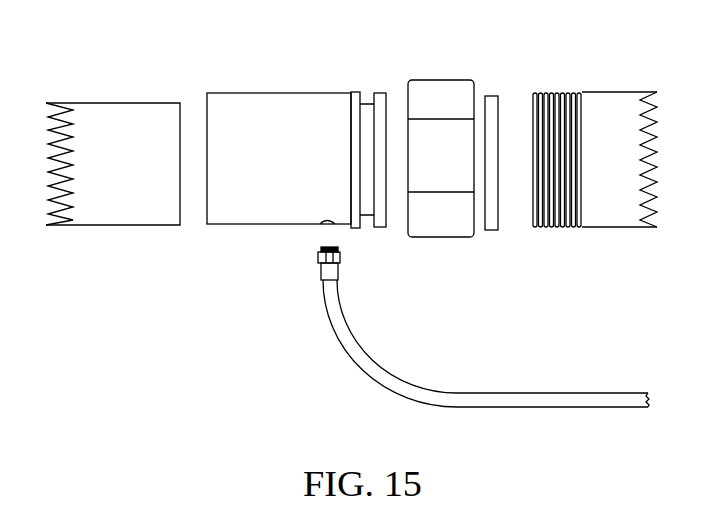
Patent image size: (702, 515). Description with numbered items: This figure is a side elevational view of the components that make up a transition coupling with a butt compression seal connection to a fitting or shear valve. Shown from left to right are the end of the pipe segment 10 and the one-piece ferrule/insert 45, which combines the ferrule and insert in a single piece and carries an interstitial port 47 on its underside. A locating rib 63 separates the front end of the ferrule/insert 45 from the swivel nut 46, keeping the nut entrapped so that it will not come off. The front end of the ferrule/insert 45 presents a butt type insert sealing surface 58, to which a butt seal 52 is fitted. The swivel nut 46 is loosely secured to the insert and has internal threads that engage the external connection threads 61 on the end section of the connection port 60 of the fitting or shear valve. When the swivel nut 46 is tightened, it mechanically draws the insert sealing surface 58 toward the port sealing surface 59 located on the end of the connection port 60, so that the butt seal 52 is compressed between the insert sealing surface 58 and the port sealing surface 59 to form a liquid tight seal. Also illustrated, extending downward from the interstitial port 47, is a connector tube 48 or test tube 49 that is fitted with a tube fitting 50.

The pipe segment 10 is at (128, 132).
The one-piece ferrule/insert 45 is at (293, 122).
The interstitial port 47 is at (328, 230).
The locating rib 63 is at (354, 87).
The insert sealing surface 58 is at (390, 98).
The swivel nut 46 is at (443, 92).
The butt seal 52 is at (490, 216).
The port sealing surface 59 is at (548, 155).
The external connection threads 61 is at (557, 203).
The connection port 60 is at (625, 208).
The tube fitting 50 is at (335, 267).
The connector tube 48 is at (486, 343).
The test tube 49 is at (422, 390).